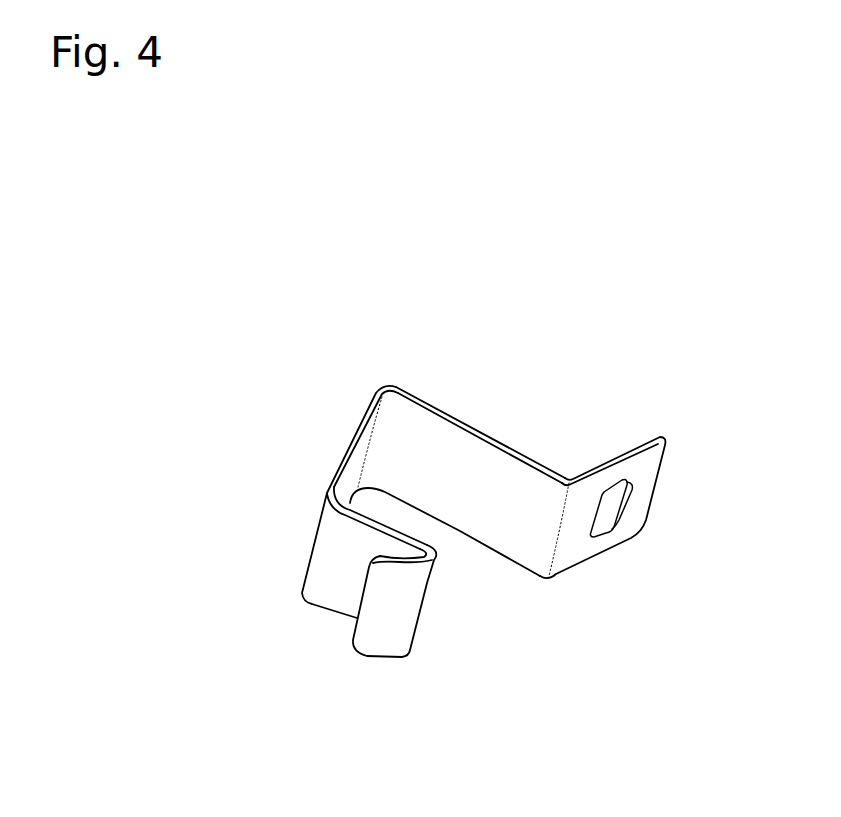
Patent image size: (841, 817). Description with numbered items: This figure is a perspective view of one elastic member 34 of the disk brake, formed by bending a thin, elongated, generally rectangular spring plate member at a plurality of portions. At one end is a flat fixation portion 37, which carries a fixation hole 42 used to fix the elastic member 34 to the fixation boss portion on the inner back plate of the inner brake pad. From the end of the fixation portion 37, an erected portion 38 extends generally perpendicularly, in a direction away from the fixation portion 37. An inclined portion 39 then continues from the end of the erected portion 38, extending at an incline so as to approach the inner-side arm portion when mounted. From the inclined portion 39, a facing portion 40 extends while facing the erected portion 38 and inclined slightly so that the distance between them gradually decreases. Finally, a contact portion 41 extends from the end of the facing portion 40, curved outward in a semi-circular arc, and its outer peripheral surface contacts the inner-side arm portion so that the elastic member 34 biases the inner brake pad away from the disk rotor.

The elastic member 34 is at (612, 325).
The fixation portion 37 is at (647, 502).
The erected portion 38 is at (485, 469).
The inclined portion 39 is at (350, 476).
The facing portion 40 is at (337, 588).
The contact portion 41 is at (385, 630).
The fixation hole 42 is at (614, 479).